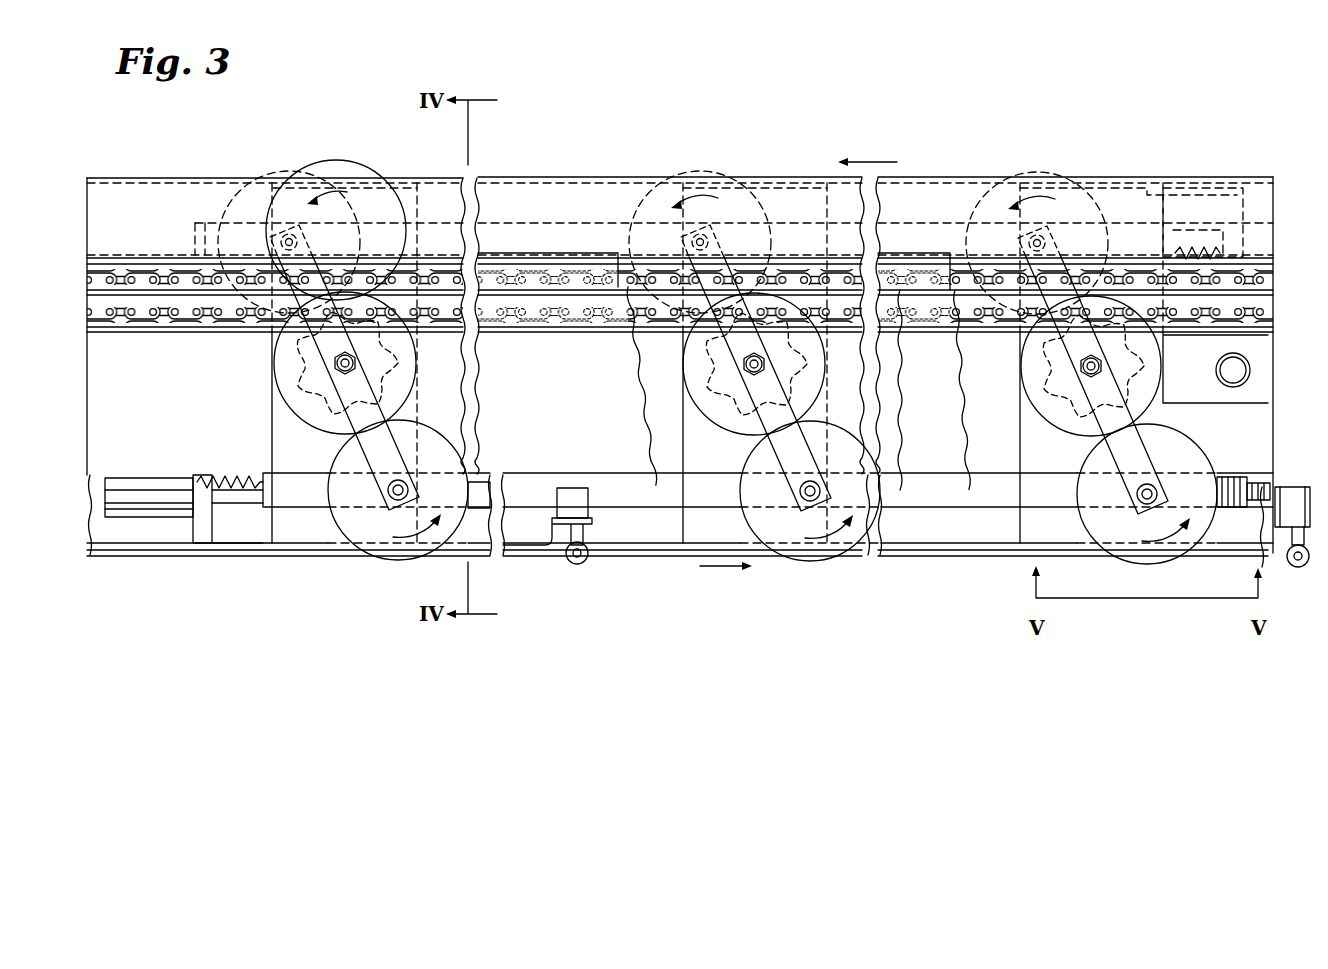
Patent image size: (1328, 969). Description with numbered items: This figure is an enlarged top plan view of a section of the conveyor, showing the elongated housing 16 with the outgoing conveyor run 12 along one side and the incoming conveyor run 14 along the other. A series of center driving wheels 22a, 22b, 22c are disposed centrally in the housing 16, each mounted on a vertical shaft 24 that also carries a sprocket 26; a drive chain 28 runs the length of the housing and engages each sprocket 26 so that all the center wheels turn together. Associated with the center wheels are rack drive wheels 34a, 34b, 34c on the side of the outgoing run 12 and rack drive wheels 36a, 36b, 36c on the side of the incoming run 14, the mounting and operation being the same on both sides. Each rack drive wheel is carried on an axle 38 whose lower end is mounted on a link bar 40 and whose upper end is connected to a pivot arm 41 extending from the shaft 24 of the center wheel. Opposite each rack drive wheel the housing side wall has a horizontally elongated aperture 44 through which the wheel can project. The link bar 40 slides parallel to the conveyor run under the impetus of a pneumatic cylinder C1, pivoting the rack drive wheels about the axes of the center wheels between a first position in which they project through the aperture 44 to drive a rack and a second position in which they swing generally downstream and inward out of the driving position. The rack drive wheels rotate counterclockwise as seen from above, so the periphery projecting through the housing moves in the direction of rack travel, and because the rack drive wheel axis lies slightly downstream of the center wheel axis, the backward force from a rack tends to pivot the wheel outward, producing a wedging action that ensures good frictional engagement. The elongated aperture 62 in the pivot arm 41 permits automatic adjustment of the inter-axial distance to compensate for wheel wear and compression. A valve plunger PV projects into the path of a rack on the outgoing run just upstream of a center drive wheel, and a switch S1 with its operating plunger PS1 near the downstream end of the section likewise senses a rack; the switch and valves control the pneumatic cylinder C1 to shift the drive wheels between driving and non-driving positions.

The outgoing conveyor run 12 is at (678, 565).
The incoming conveyor run 14 is at (548, 173).
The elongated housing 16 is at (992, 468).
The driving wheel 22a is at (277, 385).
The driving wheel 22b is at (721, 422).
The driving wheel 22c is at (1058, 425).
The vertical shaft 24 is at (354, 362).
The sprocket 26 is at (312, 408).
The drive chain 28 is at (133, 323).
The rack drive wheel 34a is at (455, 527).
The rack drive wheel 34b is at (861, 531).
The rack drive wheel 34c is at (1192, 542).
The rack drive wheel 36a is at (350, 162).
The rack drive wheel 36b is at (710, 174).
The rack drive wheel 36c is at (1042, 177).
The axle 38 is at (406, 482).
The link bar 40 is at (310, 492).
The pivot arm 41 is at (378, 453).
The aperture 44 is at (337, 561).
The elongated aperture 62 is at (338, 362).
The pneumatic cylinder C1 is at (147, 489).
The valve plunger PV is at (582, 566).
The switch S1 is at (1290, 490).
The switch operating plunger PS1 is at (1300, 567).